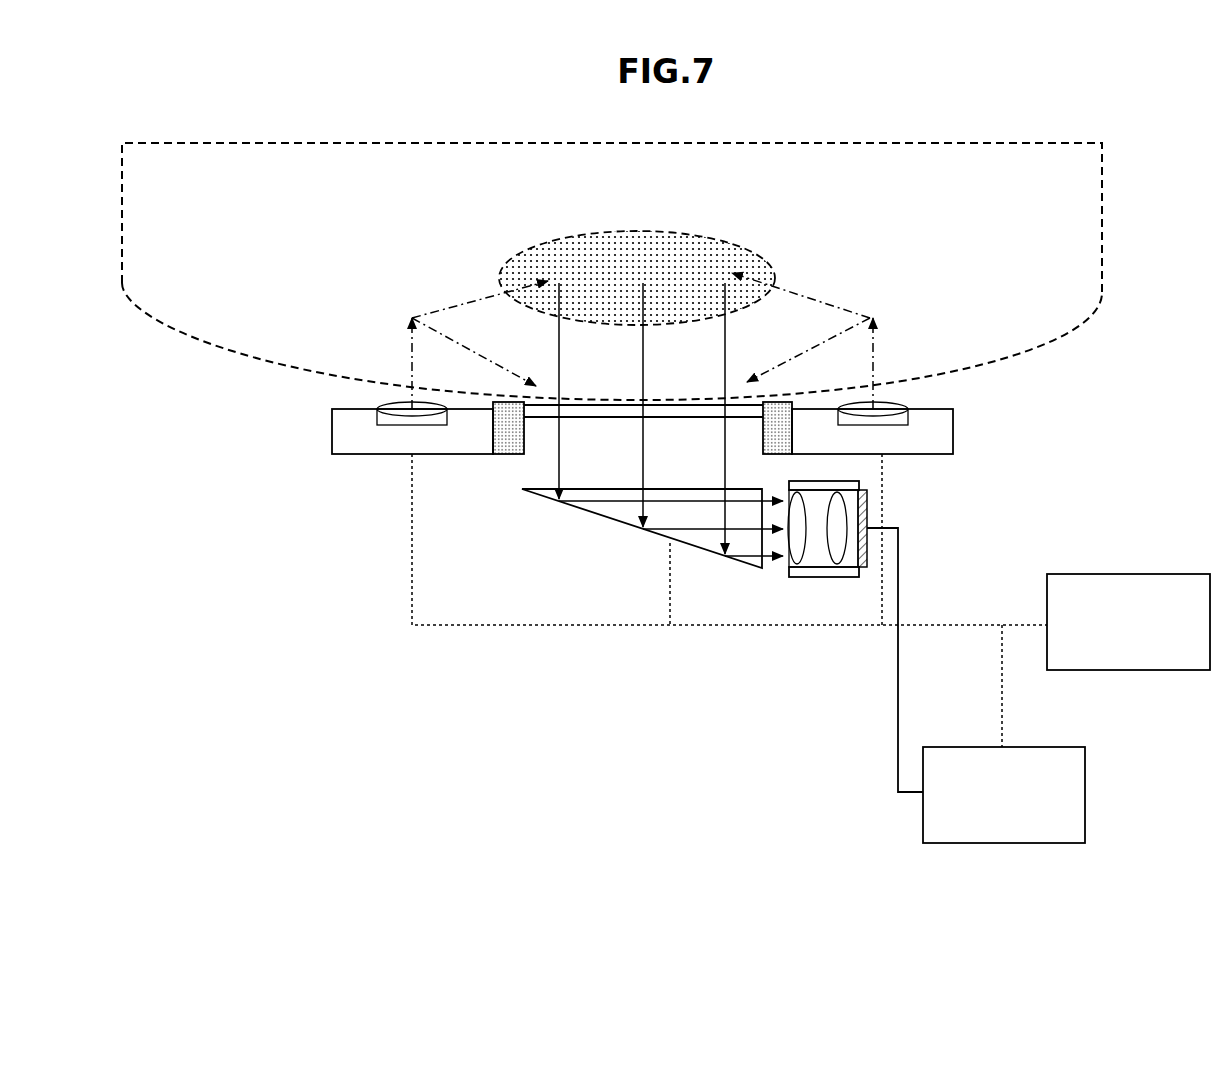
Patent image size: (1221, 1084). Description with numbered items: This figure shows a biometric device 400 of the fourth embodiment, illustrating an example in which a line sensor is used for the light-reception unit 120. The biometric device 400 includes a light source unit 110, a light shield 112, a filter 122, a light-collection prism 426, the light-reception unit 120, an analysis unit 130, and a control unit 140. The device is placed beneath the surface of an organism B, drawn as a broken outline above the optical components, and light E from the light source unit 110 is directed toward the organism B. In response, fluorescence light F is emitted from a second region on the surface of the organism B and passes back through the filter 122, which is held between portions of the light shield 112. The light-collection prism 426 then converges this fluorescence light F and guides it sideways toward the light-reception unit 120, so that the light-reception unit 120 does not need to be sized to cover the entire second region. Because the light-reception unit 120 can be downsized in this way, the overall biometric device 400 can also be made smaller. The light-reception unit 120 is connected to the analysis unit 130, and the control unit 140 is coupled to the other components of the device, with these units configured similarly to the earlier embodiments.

The organism B is at (960, 143).
The excitation light E is at (405, 345).
The fluorescence light F is at (557, 360).
The light source unit 110 is at (385, 454).
The light shield 112 is at (505, 455).
The filter 122 is at (540, 422).
The light-collection prism 426 is at (645, 530).
The light-reception unit 120 is at (797, 585).
The biometric device 400 is at (540, 675).
The analysis unit 130 is at (1000, 845).
The control unit 140 is at (1135, 672).